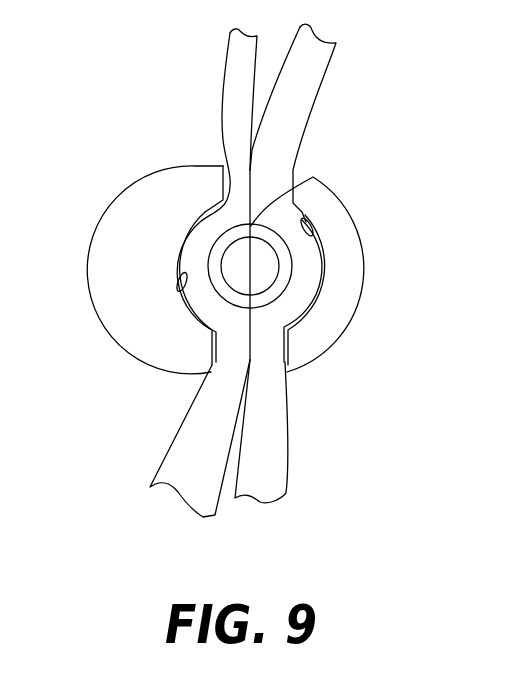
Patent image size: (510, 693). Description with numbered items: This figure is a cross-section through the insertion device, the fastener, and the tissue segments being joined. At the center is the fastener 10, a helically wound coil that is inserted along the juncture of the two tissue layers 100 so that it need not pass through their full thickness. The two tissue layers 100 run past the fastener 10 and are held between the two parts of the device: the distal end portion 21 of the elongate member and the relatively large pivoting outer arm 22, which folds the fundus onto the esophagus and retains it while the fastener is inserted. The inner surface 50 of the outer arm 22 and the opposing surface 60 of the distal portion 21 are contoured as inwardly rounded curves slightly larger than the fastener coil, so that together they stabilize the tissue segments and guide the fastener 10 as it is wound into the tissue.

The fastener 10 is at (297, 190).
The distal end portion 21 is at (142, 212).
The outer arm 22 is at (348, 262).
The inner surface 50 is at (306, 216).
The opposing surface 60 is at (180, 284).
The tissue layer 100 is at (200, 438).